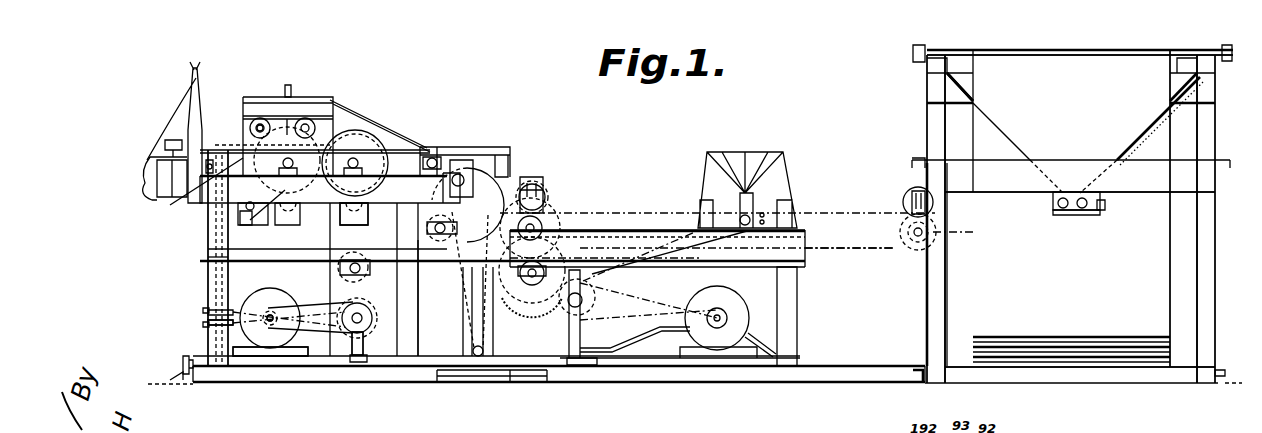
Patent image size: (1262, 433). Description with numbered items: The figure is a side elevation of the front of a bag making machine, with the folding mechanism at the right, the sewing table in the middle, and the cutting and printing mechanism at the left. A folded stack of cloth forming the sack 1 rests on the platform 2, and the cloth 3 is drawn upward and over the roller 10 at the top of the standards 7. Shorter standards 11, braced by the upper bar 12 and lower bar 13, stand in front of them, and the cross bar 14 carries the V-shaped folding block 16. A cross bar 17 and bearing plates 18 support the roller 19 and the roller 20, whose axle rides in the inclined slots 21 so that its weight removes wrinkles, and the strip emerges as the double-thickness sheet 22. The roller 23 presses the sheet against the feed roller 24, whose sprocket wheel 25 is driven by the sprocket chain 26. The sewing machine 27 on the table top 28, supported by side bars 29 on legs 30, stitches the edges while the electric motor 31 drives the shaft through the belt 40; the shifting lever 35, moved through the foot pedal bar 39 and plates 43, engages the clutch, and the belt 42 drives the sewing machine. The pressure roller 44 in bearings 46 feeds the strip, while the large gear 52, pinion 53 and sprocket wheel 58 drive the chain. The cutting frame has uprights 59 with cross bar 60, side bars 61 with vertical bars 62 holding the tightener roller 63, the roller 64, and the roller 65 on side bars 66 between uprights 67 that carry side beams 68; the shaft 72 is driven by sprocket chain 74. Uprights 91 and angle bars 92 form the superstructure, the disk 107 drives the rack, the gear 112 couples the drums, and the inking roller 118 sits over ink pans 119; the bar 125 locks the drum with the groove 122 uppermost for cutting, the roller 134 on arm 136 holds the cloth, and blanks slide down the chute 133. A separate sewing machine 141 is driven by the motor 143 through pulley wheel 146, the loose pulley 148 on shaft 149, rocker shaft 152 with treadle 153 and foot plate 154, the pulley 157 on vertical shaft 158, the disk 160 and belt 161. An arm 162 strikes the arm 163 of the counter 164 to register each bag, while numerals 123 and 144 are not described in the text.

The sack 1 is at (1108, 355).
The platform 2 is at (1055, 368).
The cloth 3 is at (1166, 262).
The uprights or standards 7 is at (932, 125).
The roller 10 is at (1183, 53).
The standards 11 is at (945, 316).
The upper bar 12 is at (912, 160).
The lower bar 13 is at (918, 368).
The cross bar 14 is at (1213, 91).
The V-shaped folding block 16 is at (960, 86).
The cross bar 17 is at (1147, 185).
The bearing plates 18 is at (1104, 207).
The roller 19 is at (1058, 209).
The roller 20 is at (1083, 213).
The slots 21 is at (1090, 203).
The flat sheet of double thickness 22 is at (1041, 215).
The roller 23 is at (904, 197).
The feed roller 24 is at (900, 232).
The sprocket wheel 25 is at (973, 232).
The sprocket chain 26 is at (838, 252).
The sewing machine 27 is at (753, 210).
The table top or platform 28 is at (800, 232).
The side bars 29 is at (757, 258).
The uprights or legs 30 is at (797, 290).
The electric motor 31 is at (707, 293).
The shifting bar or lever 35 is at (581, 333).
The foot pedal bar 39 is at (635, 344).
The belt 40 is at (663, 275).
The belt 42 is at (630, 211).
The plates 43 is at (776, 347).
The roller 44 is at (533, 178).
The bearings 46 is at (546, 201).
The large gear 52 is at (548, 220).
The small gear or pinion 53 is at (532, 284).
The sprocket wheel 58 is at (514, 306).
The inner standards or uprights 59 is at (677, 210).
The cross bar 60 is at (420, 270).
The side bars 61 is at (517, 382).
The vertically extending strips or bars 62 is at (463, 339).
The roller 63 is at (474, 356).
The roller 64 is at (330, 188).
The roller 65 is at (368, 272).
The side bars 66 is at (310, 253).
The uprights 67 is at (208, 263).
The side beams 68 is at (437, 147).
The shaft 72 is at (490, 172).
The sprocket chain 74 is at (408, 158).
The uprights 91 is at (251, 124).
The angle bars 92 is at (310, 103).
The disk 107 is at (455, 148).
The gear 112 is at (372, 140).
The inking roller 118 is at (368, 218).
The ink pans 119 is at (330, 224).
The slot or groove 122 is at (287, 160).
The pin 123 is at (287, 85).
The bar 125 is at (448, 161).
The chute 133 is at (200, 241).
The roller 134 is at (259, 124).
The arm 136 is at (195, 190).
The sewing machine 141 is at (150, 160).
The motor 143 is at (264, 302).
The base 144 is at (297, 356).
The pulley wheel 146 is at (268, 326).
The pulley 148 is at (370, 299).
The shaft 149 is at (363, 337).
The rocker shaft 152 is at (193, 352).
The lever or treadle 153 is at (185, 356).
The foot plate 154 is at (178, 381).
The pulley 157 is at (212, 312).
The shaft 158 is at (210, 284).
The pulley wheel or disk 160 is at (218, 149).
The belt 161 is at (180, 118).
The arm 162 is at (336, 99).
The arm 163 is at (261, 211).
The counter 164 is at (258, 229).